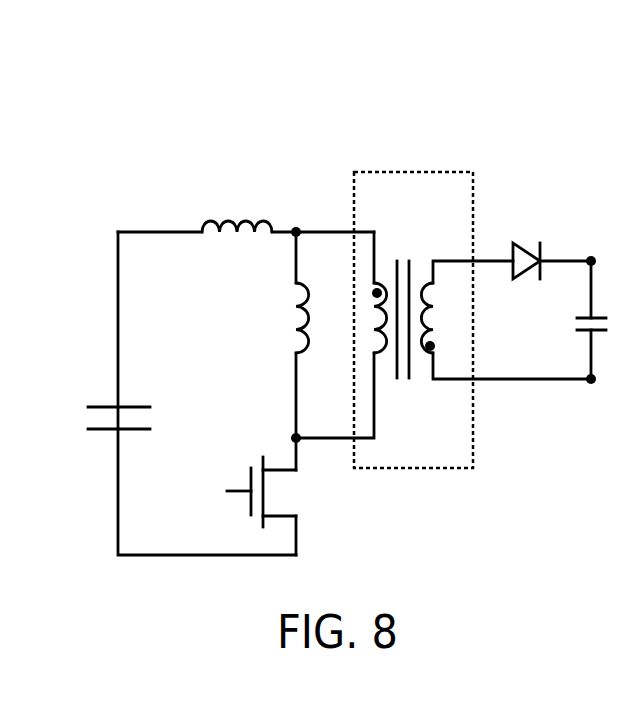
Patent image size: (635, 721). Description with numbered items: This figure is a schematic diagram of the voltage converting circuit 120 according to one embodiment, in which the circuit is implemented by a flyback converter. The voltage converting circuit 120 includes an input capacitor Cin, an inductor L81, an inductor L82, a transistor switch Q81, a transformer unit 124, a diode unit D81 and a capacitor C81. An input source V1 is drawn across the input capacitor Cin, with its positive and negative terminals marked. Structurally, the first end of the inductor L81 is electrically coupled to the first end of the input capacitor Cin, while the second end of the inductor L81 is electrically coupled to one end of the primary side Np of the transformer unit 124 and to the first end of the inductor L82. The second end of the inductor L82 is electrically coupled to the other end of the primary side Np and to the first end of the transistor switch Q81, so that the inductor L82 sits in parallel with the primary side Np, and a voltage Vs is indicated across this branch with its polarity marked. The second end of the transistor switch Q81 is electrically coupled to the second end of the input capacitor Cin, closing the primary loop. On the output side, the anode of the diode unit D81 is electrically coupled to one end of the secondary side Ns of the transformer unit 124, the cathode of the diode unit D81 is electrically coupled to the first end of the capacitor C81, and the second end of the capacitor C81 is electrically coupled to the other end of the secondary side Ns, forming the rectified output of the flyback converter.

The voltage converting circuit 120 is at (605, 28).
The transformer unit 124 is at (445, 172).
The inductor L81 is at (237, 243).
The inductor L82 is at (279, 319).
The input voltage source V1 is at (100, 417).
The input capacitor Cin is at (146, 439).
The transistor switch Q81 is at (286, 500).
The primary side Np is at (379, 272).
The secondary side Ns is at (432, 291).
The voltage Vs across primary Vs is at (348, 320).
The diode unit D81 is at (530, 246).
The capacitor C81 is at (568, 322).